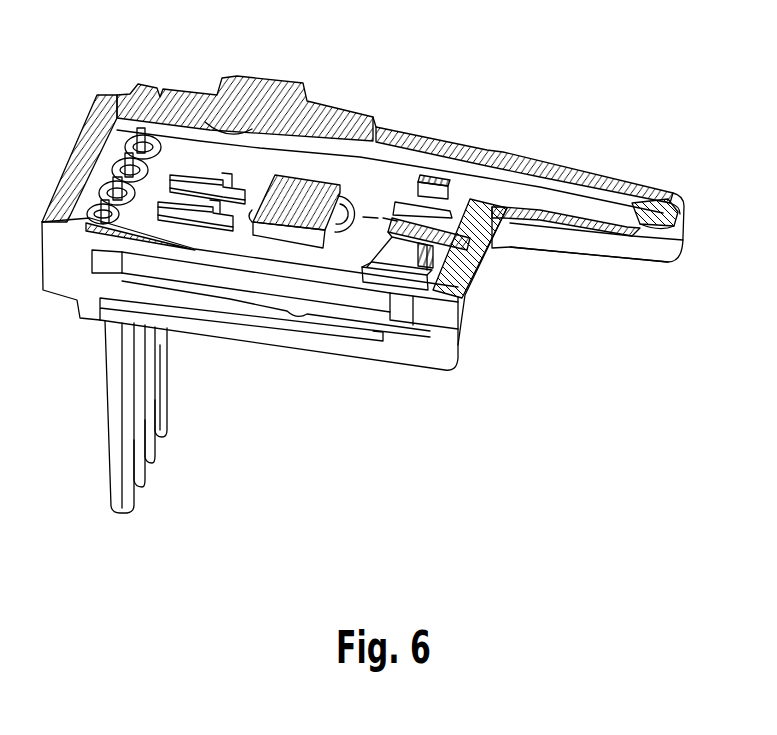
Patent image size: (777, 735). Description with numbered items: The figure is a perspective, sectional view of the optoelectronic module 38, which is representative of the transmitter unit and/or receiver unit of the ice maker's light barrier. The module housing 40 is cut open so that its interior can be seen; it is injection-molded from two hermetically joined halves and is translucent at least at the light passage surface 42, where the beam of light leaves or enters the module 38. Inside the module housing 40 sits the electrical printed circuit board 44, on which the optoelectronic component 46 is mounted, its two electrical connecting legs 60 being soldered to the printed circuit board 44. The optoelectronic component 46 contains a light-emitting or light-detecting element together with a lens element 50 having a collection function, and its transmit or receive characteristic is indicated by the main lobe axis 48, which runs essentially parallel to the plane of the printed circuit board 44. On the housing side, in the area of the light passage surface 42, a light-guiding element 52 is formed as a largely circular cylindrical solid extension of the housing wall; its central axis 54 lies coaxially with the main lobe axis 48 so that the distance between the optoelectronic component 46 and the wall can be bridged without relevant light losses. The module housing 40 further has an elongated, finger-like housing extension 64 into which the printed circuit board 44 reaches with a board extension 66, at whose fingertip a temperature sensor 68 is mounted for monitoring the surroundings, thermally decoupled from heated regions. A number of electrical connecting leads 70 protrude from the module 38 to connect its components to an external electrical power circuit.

The optoelectronic module 38 is at (107, 96).
The module housing 40 is at (77, 133).
The light passage surface 42 is at (494, 252).
The printed circuit board 44 is at (230, 260).
The optoelectronic component 46 is at (313, 177).
The main lobe axis 48 is at (344, 215).
The lens element 50 is at (336, 236).
The light-guiding element 52 is at (407, 297).
The central axis 54 is at (481, 227).
The electrical connecting legs 60 is at (200, 176).
The housing extension 64 is at (635, 247).
The board extension 66 is at (590, 207).
The temperature sensor 68 is at (653, 207).
The electrical connecting leads 70 is at (113, 433).